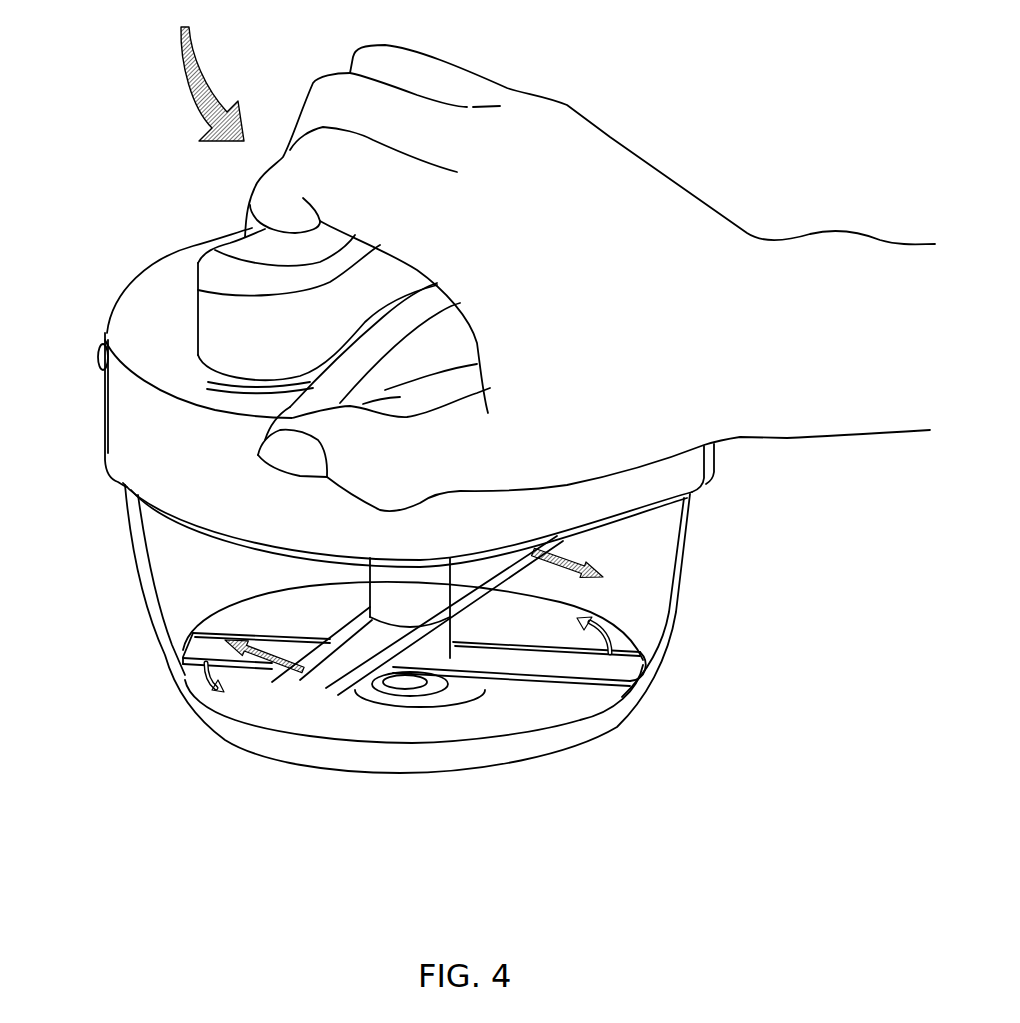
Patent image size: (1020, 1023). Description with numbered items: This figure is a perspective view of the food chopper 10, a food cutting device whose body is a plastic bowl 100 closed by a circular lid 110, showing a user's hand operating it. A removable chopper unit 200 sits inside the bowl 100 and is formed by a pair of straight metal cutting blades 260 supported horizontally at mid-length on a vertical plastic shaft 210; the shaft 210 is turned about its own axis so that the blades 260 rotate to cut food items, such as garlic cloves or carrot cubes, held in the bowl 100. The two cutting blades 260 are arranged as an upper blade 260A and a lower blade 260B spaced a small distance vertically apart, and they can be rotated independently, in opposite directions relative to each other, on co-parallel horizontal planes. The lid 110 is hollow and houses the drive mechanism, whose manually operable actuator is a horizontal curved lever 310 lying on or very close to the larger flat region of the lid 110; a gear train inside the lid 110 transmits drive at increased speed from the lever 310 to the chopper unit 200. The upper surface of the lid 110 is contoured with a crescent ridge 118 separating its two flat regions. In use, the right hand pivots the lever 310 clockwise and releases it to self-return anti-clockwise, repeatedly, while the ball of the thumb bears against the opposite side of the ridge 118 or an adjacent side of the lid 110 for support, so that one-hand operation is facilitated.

The food chopper apparatus 10 is at (160, 195).
The bowl 100 is at (693, 608).
The lid 110 is at (127, 410).
The crescent ridge 118 is at (427, 355).
The chopper unit 200 is at (493, 700).
The shaft 210 is at (390, 576).
The cutting blades 260 is at (482, 657).
The upper blade 260A is at (322, 676).
The lower blade 260B is at (617, 663).
The lever 310 is at (220, 272).